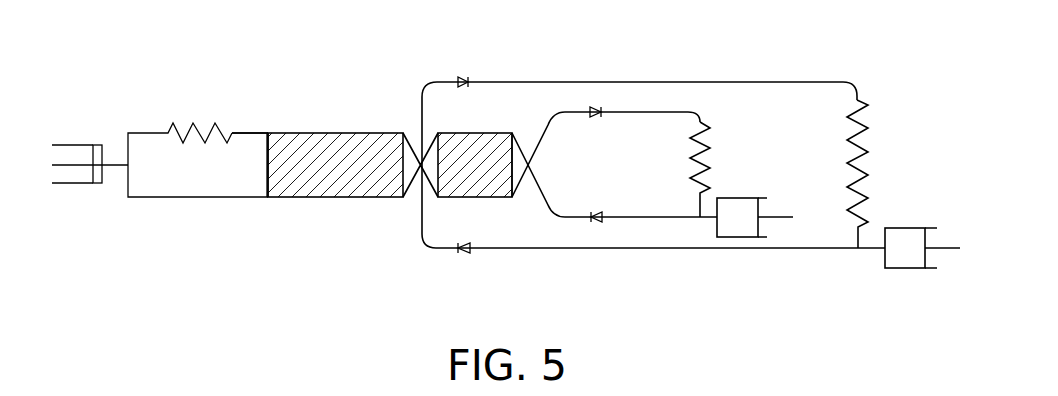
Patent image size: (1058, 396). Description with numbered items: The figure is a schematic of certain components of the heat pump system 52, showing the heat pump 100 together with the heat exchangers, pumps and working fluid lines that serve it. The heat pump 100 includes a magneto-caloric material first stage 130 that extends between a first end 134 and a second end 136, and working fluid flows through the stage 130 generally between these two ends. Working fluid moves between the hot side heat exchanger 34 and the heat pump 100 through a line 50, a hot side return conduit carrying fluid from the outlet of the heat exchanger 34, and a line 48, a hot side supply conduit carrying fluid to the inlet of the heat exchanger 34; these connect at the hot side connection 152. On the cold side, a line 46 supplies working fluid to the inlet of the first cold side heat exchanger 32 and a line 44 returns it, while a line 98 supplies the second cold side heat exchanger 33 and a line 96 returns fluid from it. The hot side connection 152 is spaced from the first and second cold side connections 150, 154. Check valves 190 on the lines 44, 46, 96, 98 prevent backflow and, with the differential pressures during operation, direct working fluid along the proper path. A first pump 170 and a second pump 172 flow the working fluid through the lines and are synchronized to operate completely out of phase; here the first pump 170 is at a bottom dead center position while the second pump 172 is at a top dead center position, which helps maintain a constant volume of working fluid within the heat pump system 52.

The heat pump system 52 is at (120, 78).
The first pump 170 is at (83, 143).
The line 50 is at (190, 199).
The hot side heat exchanger 34 is at (195, 128).
The line 48 is at (251, 136).
The hot side connection 152 is at (267, 166).
The first stage 130 is at (339, 168).
The first cold side connection 150 is at (410, 167).
The second end 136 is at (274, 128).
The heat pump 100 is at (393, 113).
The first end 134 is at (518, 206).
The second cold side connection 154 is at (520, 171).
The line 46 is at (687, 82).
The line 44 is at (663, 249).
The first cold side heat exchanger 32 is at (853, 173).
The line 98 is at (701, 122).
The second cold side heat exchanger 33 is at (703, 183).
The line 96 is at (622, 216).
The second pump 172 is at (777, 216).
The check valve 190 is at (462, 80).